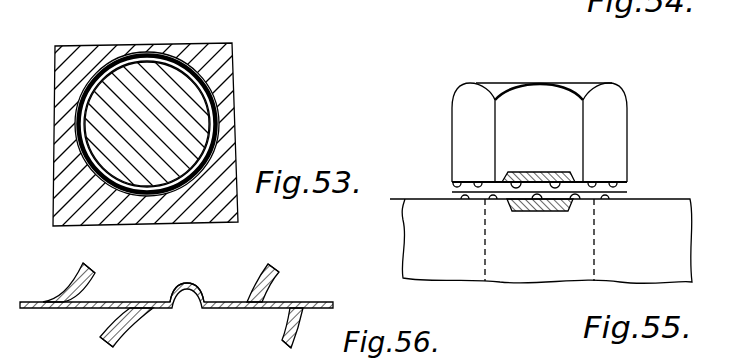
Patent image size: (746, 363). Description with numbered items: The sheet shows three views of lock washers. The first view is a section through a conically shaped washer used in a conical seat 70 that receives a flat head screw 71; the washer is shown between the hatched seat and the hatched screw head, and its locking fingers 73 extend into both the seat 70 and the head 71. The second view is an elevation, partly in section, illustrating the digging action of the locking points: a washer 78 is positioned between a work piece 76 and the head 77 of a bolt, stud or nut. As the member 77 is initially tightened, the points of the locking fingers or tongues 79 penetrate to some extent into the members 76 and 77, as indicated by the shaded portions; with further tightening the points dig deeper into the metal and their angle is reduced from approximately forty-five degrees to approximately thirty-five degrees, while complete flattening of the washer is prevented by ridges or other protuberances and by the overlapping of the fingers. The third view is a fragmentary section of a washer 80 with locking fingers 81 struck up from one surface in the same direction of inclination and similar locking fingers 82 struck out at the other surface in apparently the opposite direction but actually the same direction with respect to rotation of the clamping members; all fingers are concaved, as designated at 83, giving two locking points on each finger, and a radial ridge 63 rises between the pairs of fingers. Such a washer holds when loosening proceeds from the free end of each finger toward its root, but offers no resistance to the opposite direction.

In FIG. 53, the conical seat 70 is at (211, 92).
In FIG. 53, the flat head screw 71 is at (140, 78).
In FIG. 53, the locking fingers 73 is at (220, 134).
In FIG. 56, the radial ridges 63 is at (187, 281).
In FIG. 56, the washer 80 is at (215, 301).
In FIG. 56, the locking fingers 81 is at (272, 282).
In FIG. 56, the locking fingers 82 is at (283, 322).
In FIG. 56, the concave portion of the fingers 83 is at (259, 267).
In FIG. 55, the work piece 76 is at (424, 181).
In FIG. 55, the head of bolt, stud or nut 77 is at (539, 132).
In FIG. 55, the washer 78 is at (503, 199).
In FIG. 55, the locking fingers or tongues 79 is at (530, 176).